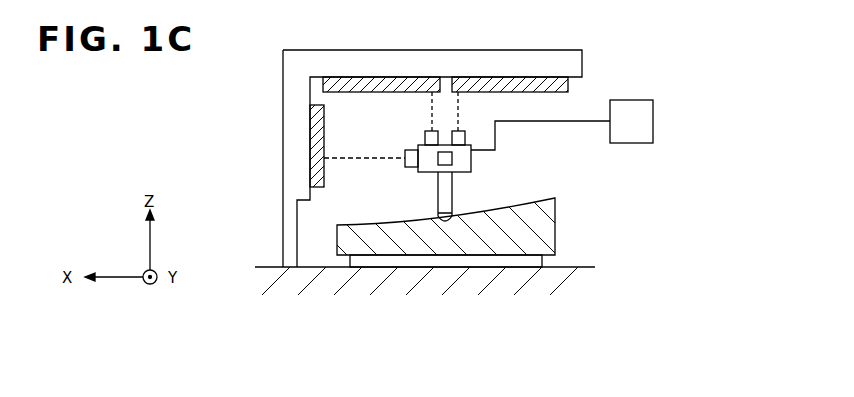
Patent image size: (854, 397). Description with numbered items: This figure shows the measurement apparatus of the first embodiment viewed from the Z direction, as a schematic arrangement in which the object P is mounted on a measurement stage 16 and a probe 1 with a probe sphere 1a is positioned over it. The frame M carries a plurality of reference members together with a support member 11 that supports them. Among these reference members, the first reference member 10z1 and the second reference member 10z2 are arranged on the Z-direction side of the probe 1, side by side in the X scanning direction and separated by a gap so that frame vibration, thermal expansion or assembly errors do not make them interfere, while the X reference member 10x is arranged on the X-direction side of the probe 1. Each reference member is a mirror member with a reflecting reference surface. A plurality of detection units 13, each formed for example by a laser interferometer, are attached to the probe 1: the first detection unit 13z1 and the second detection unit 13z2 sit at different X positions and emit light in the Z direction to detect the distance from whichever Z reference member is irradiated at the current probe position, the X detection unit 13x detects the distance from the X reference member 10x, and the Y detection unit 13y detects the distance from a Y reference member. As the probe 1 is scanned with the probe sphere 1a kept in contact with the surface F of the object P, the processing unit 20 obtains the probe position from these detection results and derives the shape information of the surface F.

The frame M is at (253, 42).
The support member 11 is at (582, 62).
The first reference member 10z1 is at (340, 77).
The second reference member 10z2 is at (541, 77).
The X reference member 10x is at (310, 133).
The detection unit 13 is at (444, 158).
The first detection unit 13z1 is at (425, 133).
The second detection unit 13z2 is at (465, 133).
The X detection unit 13x is at (406, 152).
The Y detection unit 13y is at (452, 158).
The processing unit 20 is at (653, 112).
The probe 1 is at (438, 192).
The probe sphere 1a is at (438, 218).
The surface of the object F is at (500, 216).
The measurement stage 16 is at (350, 262).
The object P is at (500, 270).